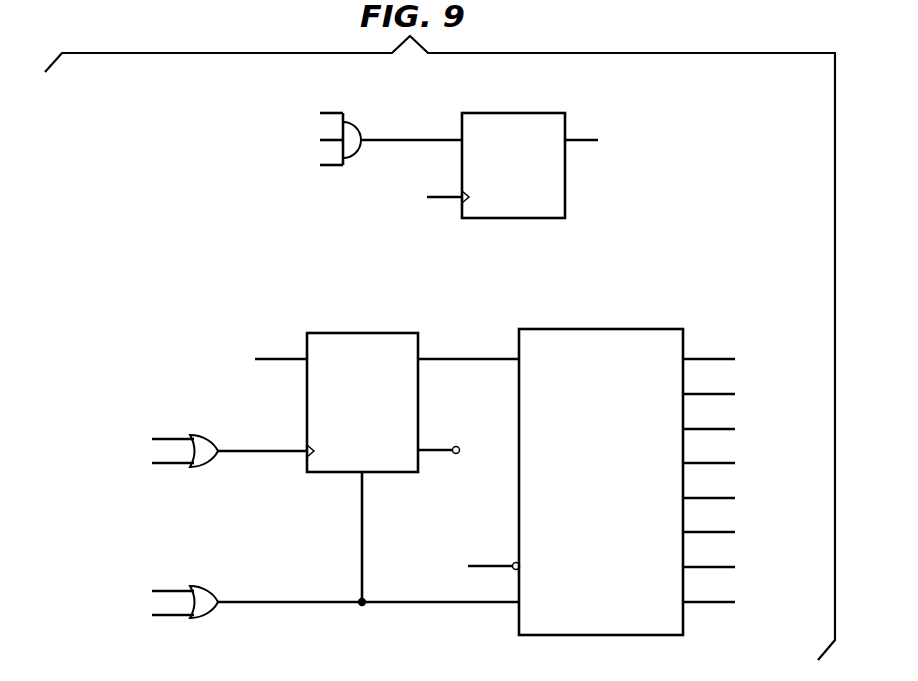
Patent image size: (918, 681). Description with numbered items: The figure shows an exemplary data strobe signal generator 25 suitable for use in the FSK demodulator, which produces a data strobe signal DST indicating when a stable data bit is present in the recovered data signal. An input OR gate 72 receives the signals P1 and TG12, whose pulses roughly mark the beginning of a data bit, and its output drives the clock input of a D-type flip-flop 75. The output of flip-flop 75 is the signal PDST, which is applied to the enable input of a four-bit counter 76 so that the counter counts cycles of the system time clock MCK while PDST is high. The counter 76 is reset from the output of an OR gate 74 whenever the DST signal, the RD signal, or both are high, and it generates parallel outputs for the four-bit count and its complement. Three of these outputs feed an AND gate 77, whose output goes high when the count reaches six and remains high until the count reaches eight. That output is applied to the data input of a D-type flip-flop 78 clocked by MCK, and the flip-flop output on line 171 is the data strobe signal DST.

The data strobe signal generator 25 is at (144, 150).
The AND gate 77 is at (357, 122).
The D-type flip-flop 78 is at (522, 112).
The line 171 is at (623, 122).
The D-type flip-flop 75 is at (378, 333).
The four-bit counter 76 is at (562, 329).
The input OR gate 72 is at (208, 467).
The OR gate 74 is at (208, 617).